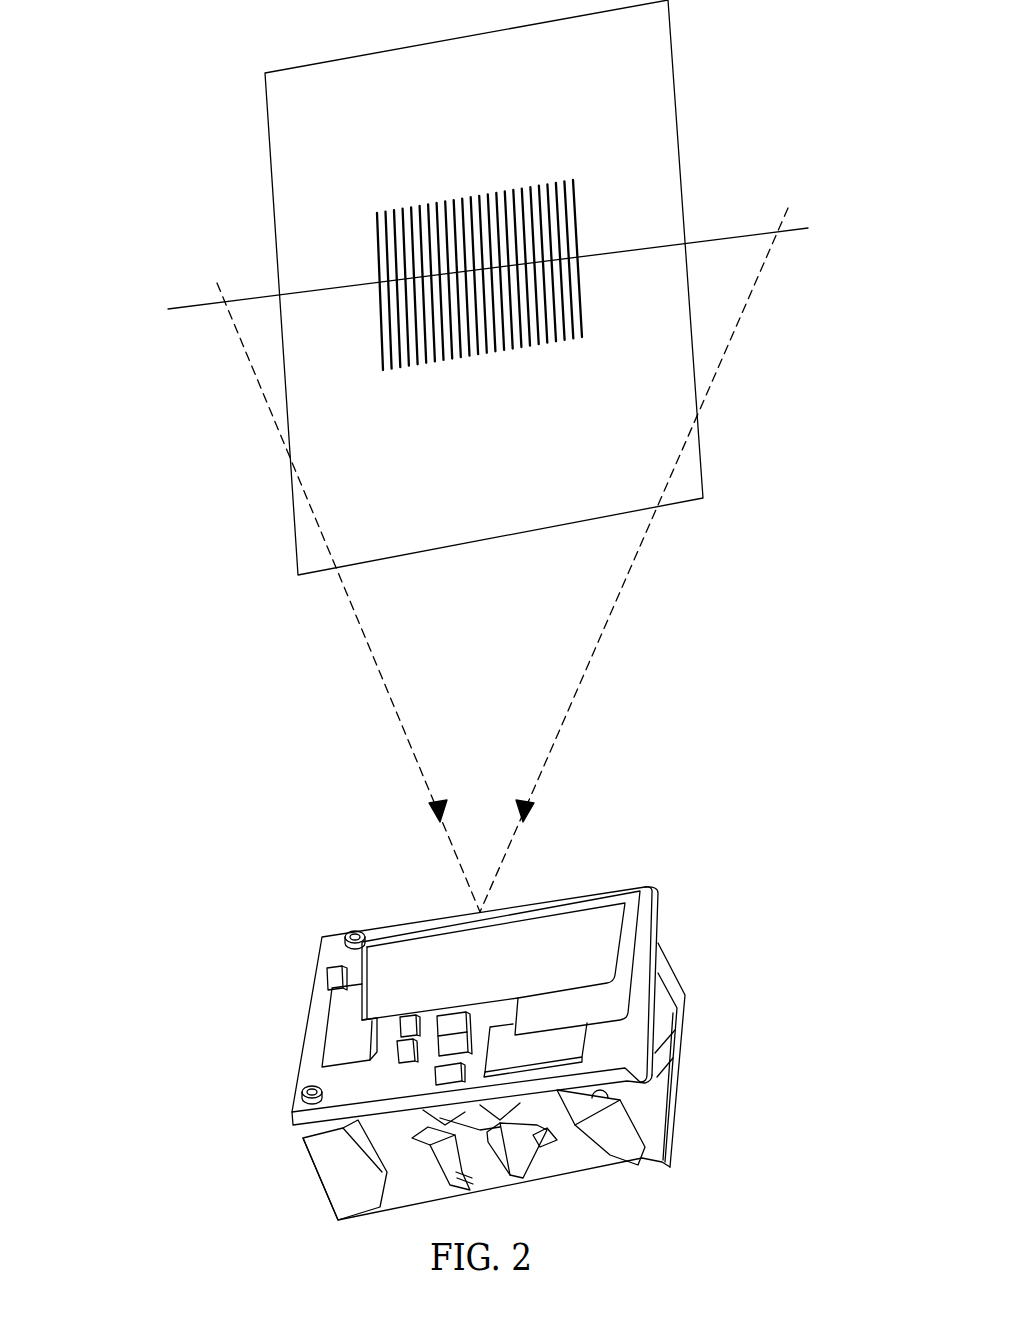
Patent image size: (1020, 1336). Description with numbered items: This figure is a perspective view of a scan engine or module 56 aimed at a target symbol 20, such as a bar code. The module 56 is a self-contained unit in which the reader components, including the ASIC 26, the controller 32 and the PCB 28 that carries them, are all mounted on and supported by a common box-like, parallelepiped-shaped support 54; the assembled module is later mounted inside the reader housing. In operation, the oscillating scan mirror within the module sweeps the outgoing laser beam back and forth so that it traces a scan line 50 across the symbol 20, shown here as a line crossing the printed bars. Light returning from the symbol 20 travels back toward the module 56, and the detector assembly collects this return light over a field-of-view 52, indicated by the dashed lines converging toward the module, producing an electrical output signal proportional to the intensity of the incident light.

The symbol 20 is at (377, 254).
The ASIC 26 is at (335, 1043).
The PCB 28 is at (326, 958).
The controller 32 is at (577, 1037).
The scan line 50 is at (122, 382).
The field-of-view 52 is at (667, 740).
The support 54 is at (333, 1172).
The scan module 56 is at (700, 919).